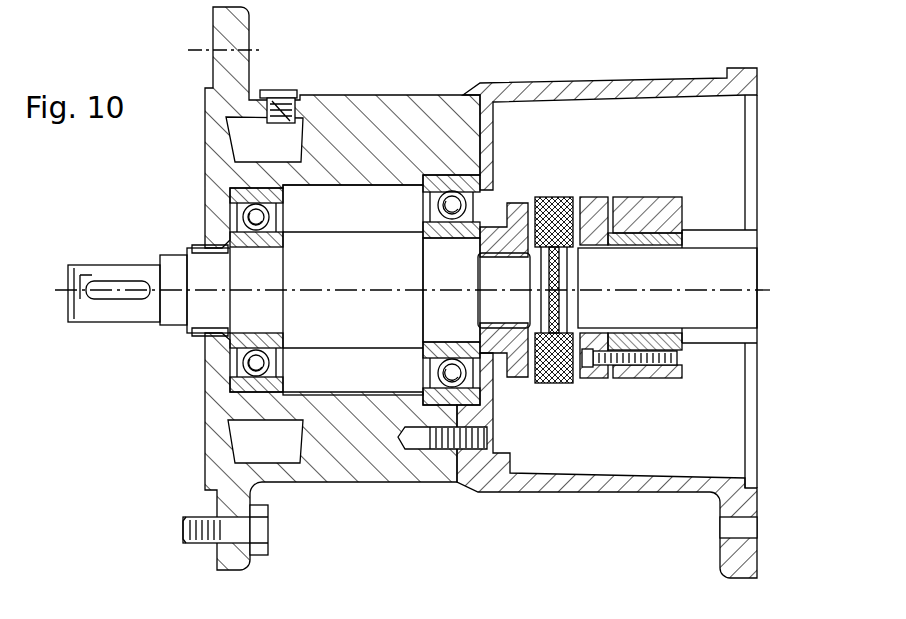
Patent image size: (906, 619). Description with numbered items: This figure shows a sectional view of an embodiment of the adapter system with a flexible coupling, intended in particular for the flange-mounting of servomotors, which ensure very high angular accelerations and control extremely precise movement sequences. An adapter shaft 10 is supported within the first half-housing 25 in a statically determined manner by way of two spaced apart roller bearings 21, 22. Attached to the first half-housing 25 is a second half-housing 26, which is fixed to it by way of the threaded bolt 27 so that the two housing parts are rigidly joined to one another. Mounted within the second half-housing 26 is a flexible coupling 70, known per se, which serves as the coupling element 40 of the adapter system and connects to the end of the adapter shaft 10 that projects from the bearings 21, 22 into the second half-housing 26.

The adapter shaft 10 is at (157, 335).
The roller bearing 21 is at (222, 392).
The roller bearing 22 is at (485, 393).
The first half-housing 25 is at (369, 468).
The second half-housing 26 is at (596, 485).
The threaded bolt 27 is at (434, 448).
The coupling element 40 is at (692, 223).
The flexible coupling 70 is at (564, 197).